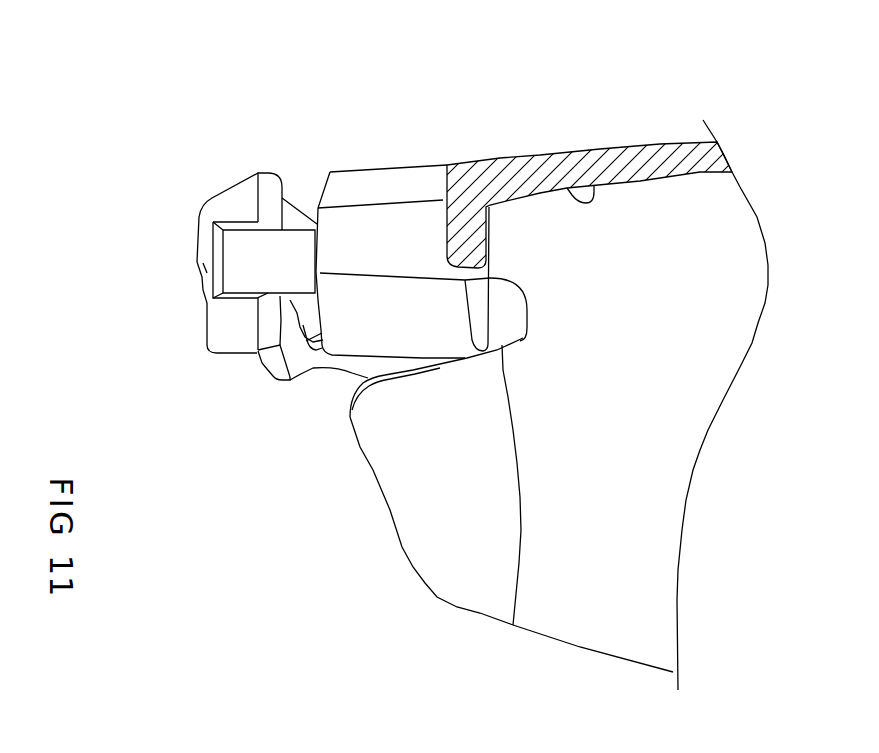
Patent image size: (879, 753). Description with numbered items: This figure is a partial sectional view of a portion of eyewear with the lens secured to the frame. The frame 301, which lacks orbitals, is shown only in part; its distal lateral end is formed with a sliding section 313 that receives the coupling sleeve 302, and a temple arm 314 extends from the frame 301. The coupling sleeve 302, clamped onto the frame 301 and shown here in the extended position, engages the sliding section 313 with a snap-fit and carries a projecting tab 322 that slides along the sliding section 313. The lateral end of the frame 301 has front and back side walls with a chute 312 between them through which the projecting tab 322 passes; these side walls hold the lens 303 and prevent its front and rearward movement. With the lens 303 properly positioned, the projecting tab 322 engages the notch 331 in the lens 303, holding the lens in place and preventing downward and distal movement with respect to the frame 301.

The frame 301 is at (690, 167).
The coupling sleeve 302 is at (386, 188).
The lens 303 is at (637, 595).
The chute 312 is at (596, 185).
The sliding section 313 is at (240, 248).
The temple arm 314 is at (303, 367).
The projecting tab 322 is at (498, 298).
The notch 331 is at (513, 625).